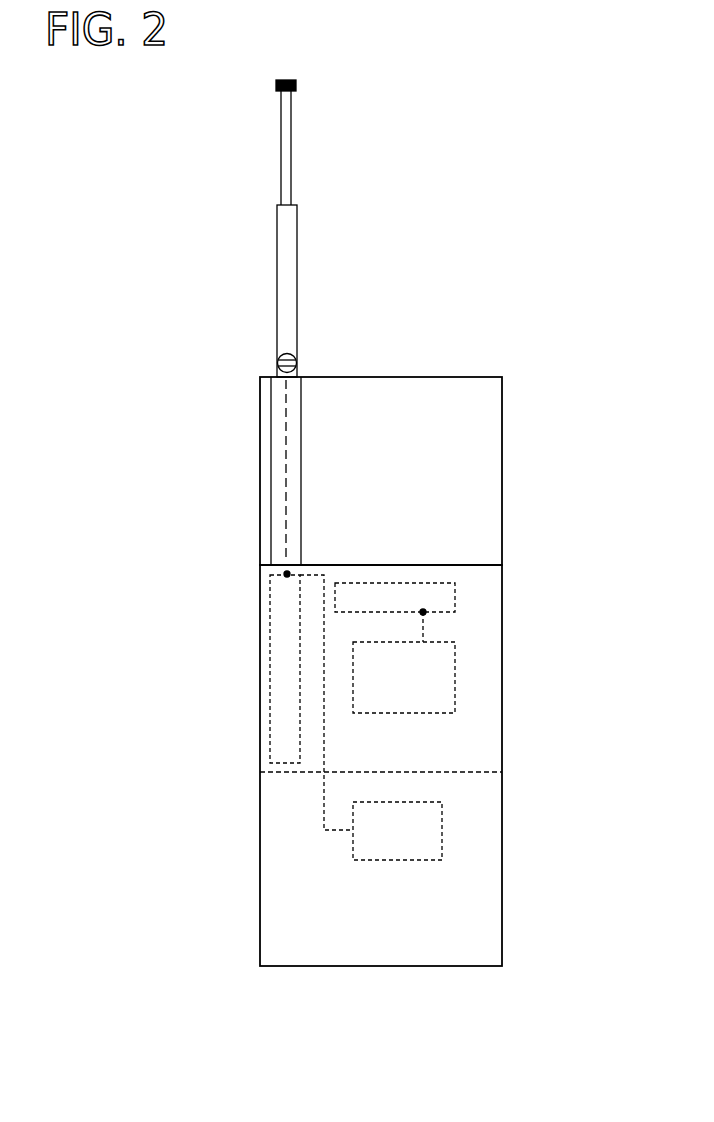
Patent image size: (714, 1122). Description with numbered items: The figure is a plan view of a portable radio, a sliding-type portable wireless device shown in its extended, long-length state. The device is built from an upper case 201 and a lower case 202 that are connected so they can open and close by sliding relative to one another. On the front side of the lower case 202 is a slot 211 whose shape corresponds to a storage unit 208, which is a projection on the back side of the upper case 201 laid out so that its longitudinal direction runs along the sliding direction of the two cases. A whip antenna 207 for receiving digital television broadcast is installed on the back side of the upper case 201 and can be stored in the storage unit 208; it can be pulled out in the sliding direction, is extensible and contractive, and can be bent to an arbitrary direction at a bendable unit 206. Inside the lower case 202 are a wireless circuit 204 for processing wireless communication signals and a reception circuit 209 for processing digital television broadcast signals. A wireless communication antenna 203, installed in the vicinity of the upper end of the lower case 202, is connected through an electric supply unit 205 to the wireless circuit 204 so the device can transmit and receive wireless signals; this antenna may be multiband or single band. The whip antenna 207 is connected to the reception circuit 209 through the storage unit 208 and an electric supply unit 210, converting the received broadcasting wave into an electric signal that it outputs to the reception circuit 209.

The upper case 201 is at (456, 376).
The lower case 202 is at (485, 928).
The wireless communication antenna 203 is at (455, 598).
The wireless circuit 204 is at (455, 690).
The electric supply unit 205 is at (423, 612).
The bendable unit 206 is at (297, 351).
The whip antenna 207 is at (297, 228).
The storage unit 208 is at (271, 410).
The reception circuit 209 is at (442, 825).
The electric supply unit 210 is at (285, 575).
The slot 211 is at (270, 640).